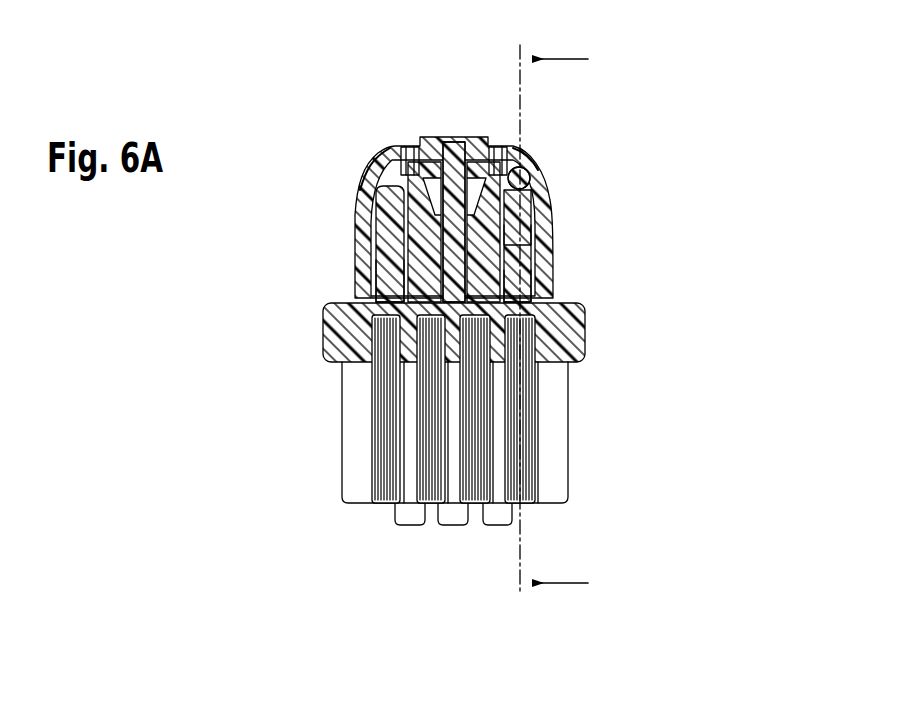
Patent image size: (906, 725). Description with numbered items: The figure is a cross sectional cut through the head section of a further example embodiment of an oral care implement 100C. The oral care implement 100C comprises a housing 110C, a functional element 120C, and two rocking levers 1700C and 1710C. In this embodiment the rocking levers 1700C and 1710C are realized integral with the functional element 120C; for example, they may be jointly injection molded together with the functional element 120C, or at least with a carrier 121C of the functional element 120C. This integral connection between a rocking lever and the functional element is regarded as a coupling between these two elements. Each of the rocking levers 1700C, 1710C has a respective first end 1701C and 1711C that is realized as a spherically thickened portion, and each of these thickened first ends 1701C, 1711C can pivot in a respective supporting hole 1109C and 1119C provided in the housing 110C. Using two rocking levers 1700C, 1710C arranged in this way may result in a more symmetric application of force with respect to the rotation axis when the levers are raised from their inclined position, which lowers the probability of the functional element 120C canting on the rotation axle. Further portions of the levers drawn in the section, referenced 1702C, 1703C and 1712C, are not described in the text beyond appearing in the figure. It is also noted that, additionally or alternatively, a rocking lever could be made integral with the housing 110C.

The oral care implement 100C is at (520, 311).
The housing 110C is at (536, 208).
The functional element 120C is at (549, 332).
The carrier 121C is at (567, 336).
The supporting hole 1109C is at (523, 153).
The supporting hole 1119C is at (397, 145).
The rocking lever 1700C is at (647, 231).
The first end 1701C is at (523, 177).
The insert foot 1702C is at (530, 298).
The insert body 1703C is at (535, 235).
The rocking lever 1710C is at (370, 246).
The first end 1711C is at (375, 157).
The insert lower portion 1712C is at (392, 278).